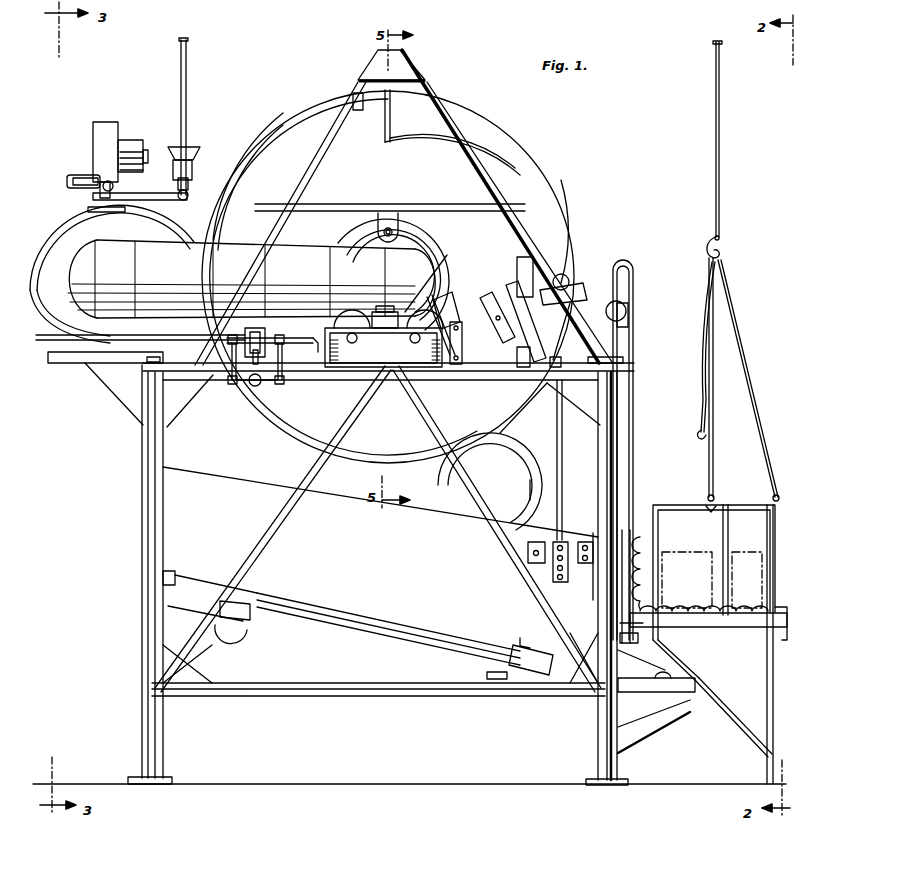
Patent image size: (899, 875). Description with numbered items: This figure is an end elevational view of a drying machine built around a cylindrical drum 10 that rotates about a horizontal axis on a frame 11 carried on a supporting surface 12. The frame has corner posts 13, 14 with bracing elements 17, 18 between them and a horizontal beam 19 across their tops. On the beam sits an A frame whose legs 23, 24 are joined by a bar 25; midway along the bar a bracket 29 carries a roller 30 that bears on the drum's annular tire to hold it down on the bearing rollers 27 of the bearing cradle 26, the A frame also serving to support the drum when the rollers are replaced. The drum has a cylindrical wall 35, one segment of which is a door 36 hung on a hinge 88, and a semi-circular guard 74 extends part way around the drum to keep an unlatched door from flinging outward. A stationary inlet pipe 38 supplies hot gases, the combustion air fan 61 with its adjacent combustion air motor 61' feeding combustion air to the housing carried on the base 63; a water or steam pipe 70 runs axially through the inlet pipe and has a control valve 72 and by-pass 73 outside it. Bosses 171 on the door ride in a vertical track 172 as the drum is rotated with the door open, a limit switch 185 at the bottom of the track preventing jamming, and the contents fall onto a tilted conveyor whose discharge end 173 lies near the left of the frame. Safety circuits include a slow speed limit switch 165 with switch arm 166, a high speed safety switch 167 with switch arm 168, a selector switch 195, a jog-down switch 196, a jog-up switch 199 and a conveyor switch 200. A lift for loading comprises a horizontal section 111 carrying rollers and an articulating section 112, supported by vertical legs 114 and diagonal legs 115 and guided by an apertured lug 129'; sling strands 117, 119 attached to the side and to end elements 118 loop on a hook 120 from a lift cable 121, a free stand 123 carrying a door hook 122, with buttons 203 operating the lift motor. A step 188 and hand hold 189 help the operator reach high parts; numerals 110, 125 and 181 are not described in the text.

The cylindrical drum 10 is at (307, 104).
The frame 11 is at (135, 566).
The supporting surface 12 is at (380, 782).
The corner post 13 is at (140, 638).
The corner post 14 is at (622, 745).
The bracing element 17 is at (212, 637).
The bracing element 18 is at (364, 698).
The horizontal beam 19 is at (308, 374).
The leg 23 is at (492, 197).
The leg 24 is at (291, 122).
The bar 25 is at (424, 206).
The bearing cradle 26 is at (372, 348).
The bearing roller 27 is at (437, 276).
The bracket 29 is at (386, 226).
The roller 30 is at (398, 232).
The cylindrical wall 35 is at (242, 160).
The door 36 is at (566, 215).
The inlet pipe 38 is at (178, 243).
The combustion air fan 61 is at (127, 155).
The combustion air motor 61' is at (136, 135).
The base 63 is at (70, 364).
The water or steam pipe 70 is at (40, 342).
The control valve 72 is at (252, 348).
The by-pass 73 is at (262, 382).
The semi-circular guard 74 is at (345, 458).
The hinge 88 is at (385, 92).
The container 110 is at (745, 550).
The horizontal section 111 is at (698, 628).
The pivoting or articulating section 112 is at (633, 535).
The vertical leg 114 is at (767, 676).
The diagonal leg 115 is at (730, 720).
The strand 117 is at (762, 437).
The horizontal end element 118 is at (675, 506).
The strand 119 is at (713, 437).
The hook 120 is at (718, 243).
The lift cable 121 is at (719, 168).
The door hook 122 is at (697, 432).
The free stand 123 is at (705, 340).
The scalloped edge 125 is at (640, 550).
The apertured lug 129' is at (641, 660).
The slow speed limit or safety switch 165 is at (525, 354).
The switch arm 166 is at (507, 330).
The high speed safety switch 167 is at (446, 306).
The switch arm 168 is at (446, 292).
The boss 171 is at (567, 278).
The vertical track 172 is at (580, 433).
The upper or discharge end 173 is at (155, 578).
The duct 181 is at (510, 450).
The limit switch 185 is at (534, 555).
The step 188 is at (675, 693).
The hand hold 189 is at (600, 450).
The selector switch 195 is at (560, 545).
The jog-down switch 196 is at (562, 570).
The jog-up switch 199 is at (586, 565).
The conveyor switch 200 is at (545, 600).
The button 203 is at (585, 545).